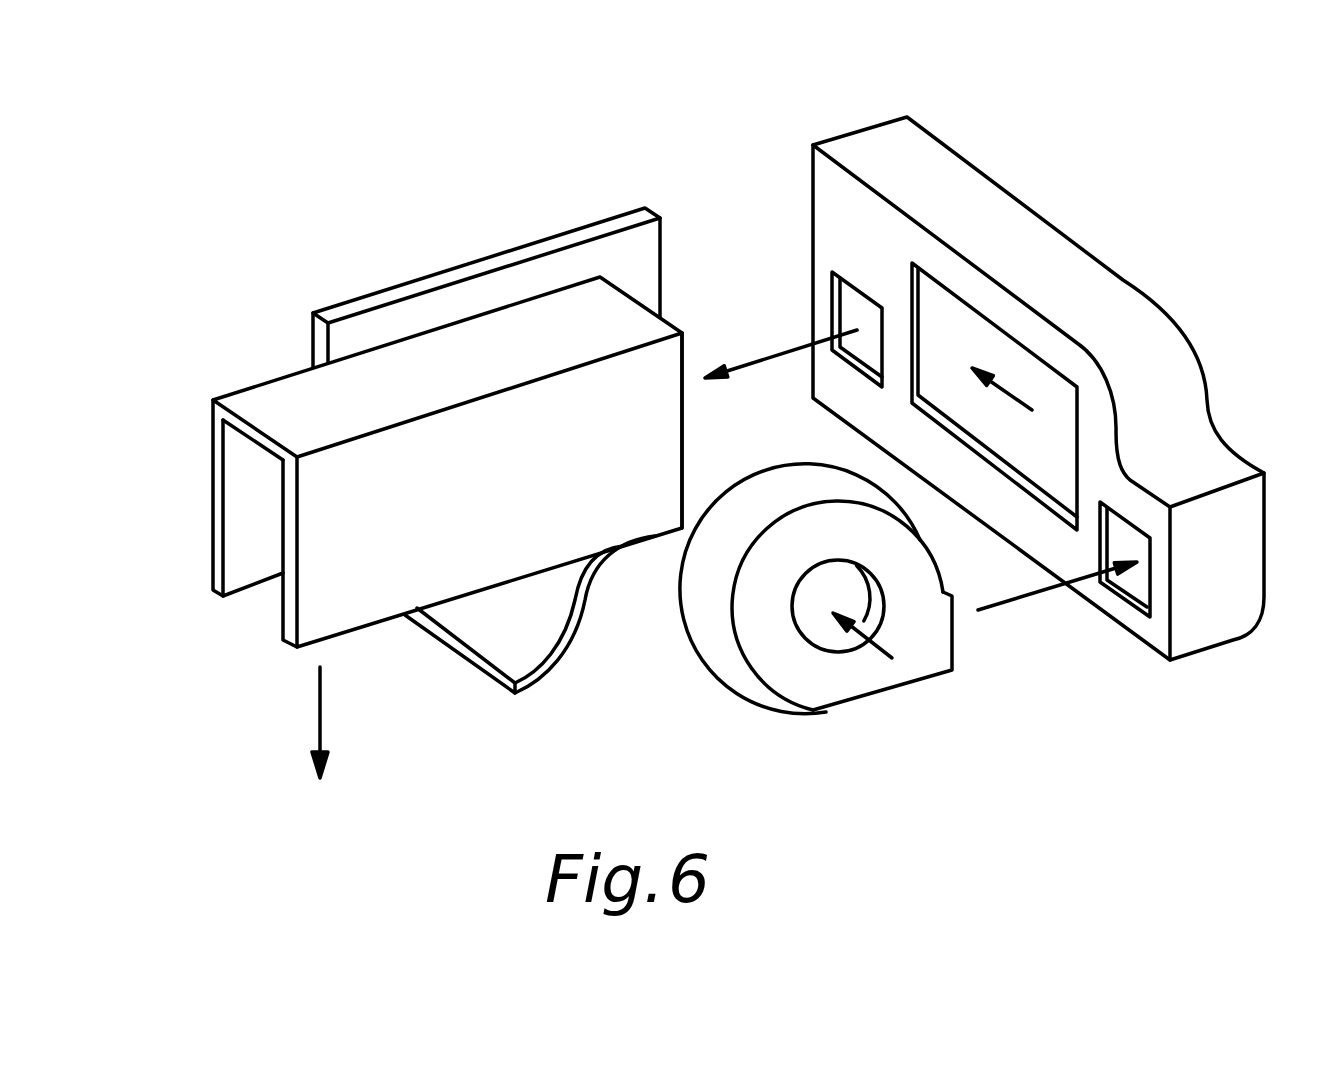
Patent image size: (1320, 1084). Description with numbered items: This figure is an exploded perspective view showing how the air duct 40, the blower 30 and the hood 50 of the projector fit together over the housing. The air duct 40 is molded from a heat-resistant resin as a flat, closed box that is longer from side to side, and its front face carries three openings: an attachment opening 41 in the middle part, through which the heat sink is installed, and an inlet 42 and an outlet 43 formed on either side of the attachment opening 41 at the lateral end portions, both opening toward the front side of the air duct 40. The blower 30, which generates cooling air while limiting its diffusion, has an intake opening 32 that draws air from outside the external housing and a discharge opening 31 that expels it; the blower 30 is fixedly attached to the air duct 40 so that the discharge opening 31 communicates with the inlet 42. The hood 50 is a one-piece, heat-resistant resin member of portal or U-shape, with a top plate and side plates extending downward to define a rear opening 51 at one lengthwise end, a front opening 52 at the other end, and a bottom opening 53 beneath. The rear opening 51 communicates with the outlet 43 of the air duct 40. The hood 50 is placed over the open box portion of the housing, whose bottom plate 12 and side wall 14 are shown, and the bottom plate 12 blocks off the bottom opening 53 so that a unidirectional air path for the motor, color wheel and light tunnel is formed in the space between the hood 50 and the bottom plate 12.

The bottom plate 12 is at (468, 663).
The side wall 14 is at (440, 272).
The blower 30 is at (865, 624).
The discharge opening 31 is at (958, 643).
The intake opening 32 is at (848, 655).
The air duct 40 is at (984, 412).
The attachment opening 41 is at (1025, 352).
The inlet 42 is at (1137, 592).
The outlet 43 is at (855, 325).
The hood 50 is at (452, 488).
The rear opening 51 is at (686, 442).
The front opening 52 is at (234, 505).
The bottom opening 53 is at (263, 608).